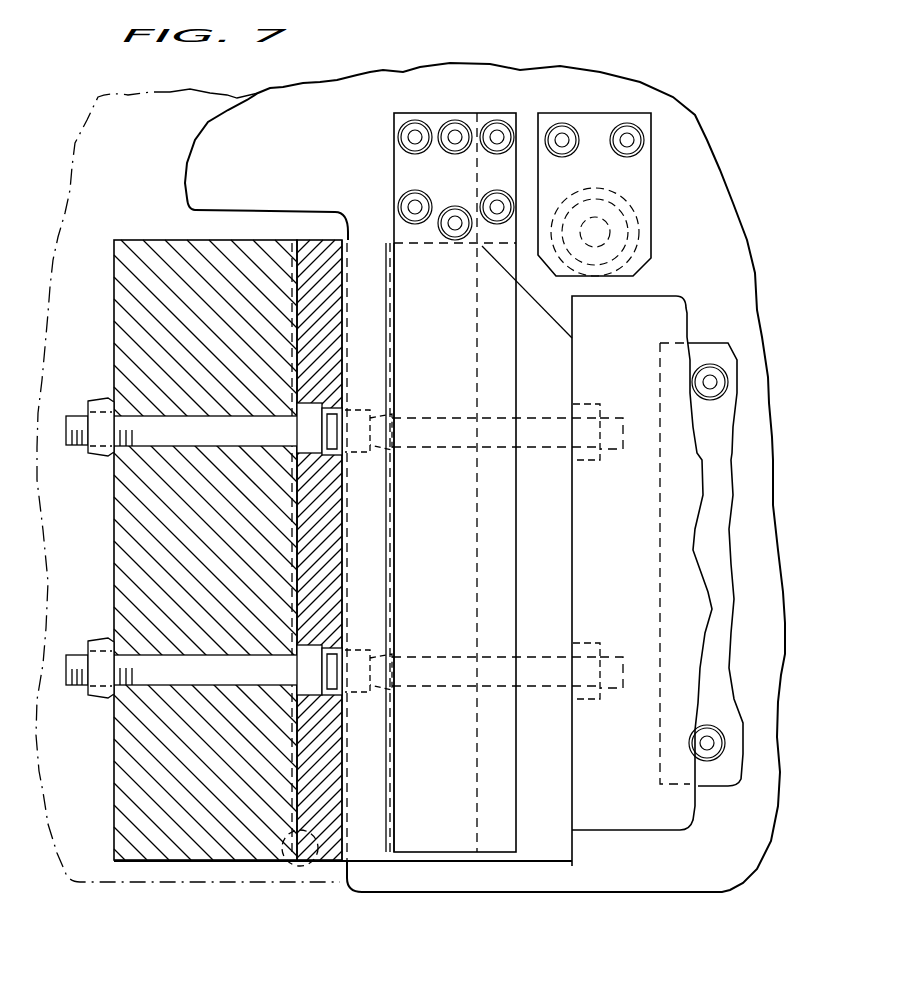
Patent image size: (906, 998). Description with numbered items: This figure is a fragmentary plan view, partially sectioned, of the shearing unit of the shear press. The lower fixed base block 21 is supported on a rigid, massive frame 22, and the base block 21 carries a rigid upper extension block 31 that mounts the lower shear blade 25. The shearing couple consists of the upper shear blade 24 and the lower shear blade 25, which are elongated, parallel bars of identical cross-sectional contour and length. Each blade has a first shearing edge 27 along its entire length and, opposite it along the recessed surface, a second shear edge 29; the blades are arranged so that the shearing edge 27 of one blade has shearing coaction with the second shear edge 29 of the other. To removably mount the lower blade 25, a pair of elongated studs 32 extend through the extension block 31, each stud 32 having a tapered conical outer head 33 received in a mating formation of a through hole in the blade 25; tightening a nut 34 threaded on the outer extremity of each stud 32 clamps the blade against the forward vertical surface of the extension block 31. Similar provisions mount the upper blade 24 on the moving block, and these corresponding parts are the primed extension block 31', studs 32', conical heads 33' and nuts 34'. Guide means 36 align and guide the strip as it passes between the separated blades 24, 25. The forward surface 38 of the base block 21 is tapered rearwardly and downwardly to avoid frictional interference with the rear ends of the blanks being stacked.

The base block 21 is at (272, 104).
The frame 22 is at (108, 130).
The upper shear blade 24 is at (330, 864).
The lower shear blade 25 is at (370, 820).
The shearing edge 27 is at (322, 400).
The second shear edge 29 is at (388, 500).
The upper extension block 31 is at (647, 582).
The extension block 31' is at (205, 574).
The stud 32 is at (514, 570).
The stud 32' is at (185, 550).
The conical outer head 33 is at (368, 573).
The conical outer head 33' is at (334, 549).
The nut 34 is at (603, 533).
The nut 34' is at (92, 545).
The guide means 36 is at (580, 284).
The forward surface 38 is at (345, 228).